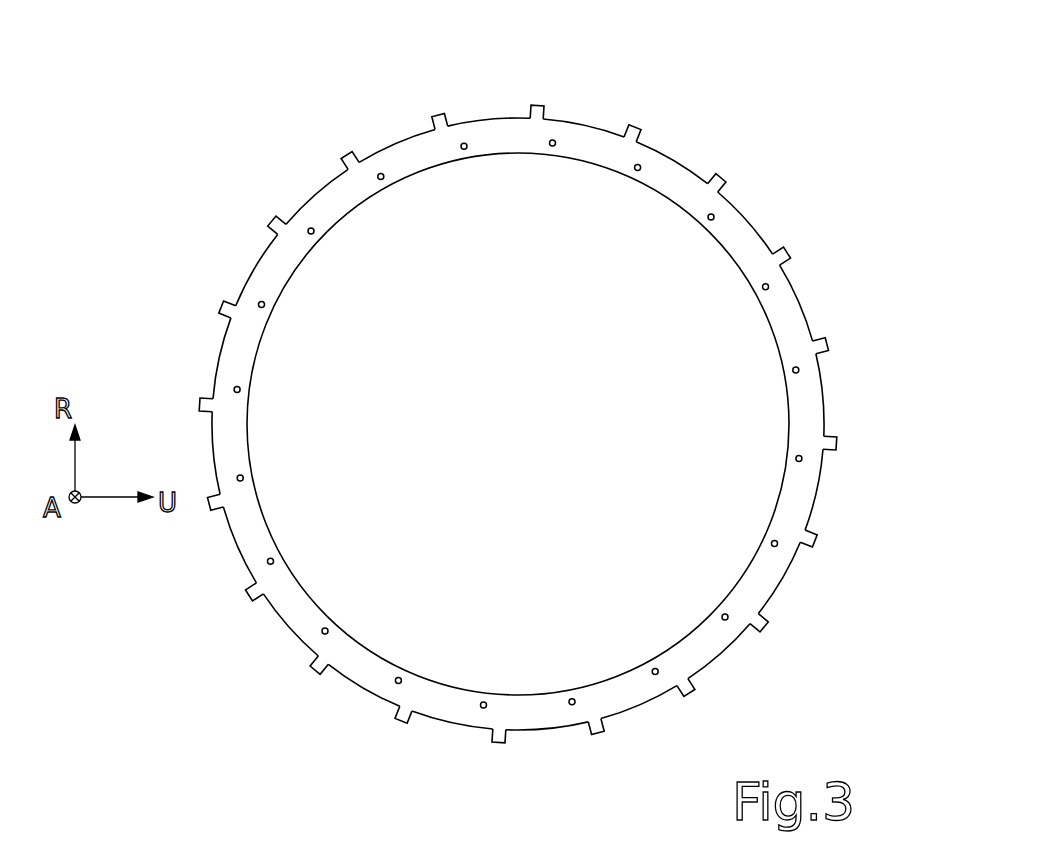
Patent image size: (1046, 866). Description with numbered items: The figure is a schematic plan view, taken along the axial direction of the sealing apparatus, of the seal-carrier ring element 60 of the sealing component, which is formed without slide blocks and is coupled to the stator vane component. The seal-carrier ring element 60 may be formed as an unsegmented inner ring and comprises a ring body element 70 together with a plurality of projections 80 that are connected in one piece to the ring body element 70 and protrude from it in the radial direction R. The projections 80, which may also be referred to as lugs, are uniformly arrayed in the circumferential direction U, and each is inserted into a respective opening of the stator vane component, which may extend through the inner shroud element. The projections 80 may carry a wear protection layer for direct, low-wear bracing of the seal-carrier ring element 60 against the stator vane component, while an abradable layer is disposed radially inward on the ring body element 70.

The seal-carrier ring element 60 is at (578, 372).
The ring body element 70 is at (752, 248).
The projections 80 is at (437, 113).